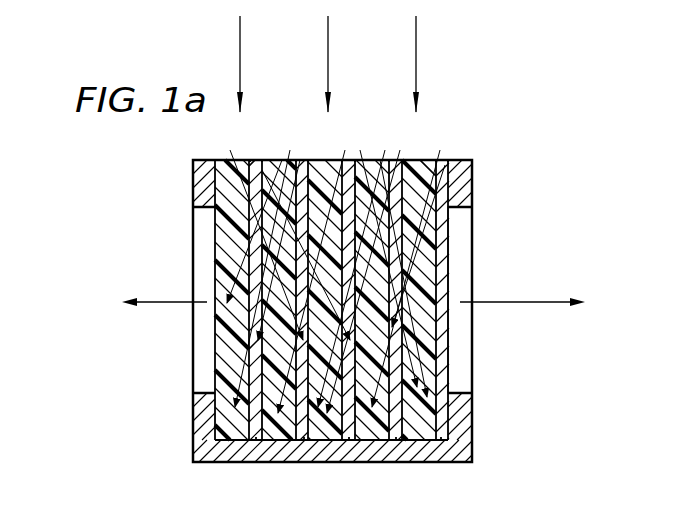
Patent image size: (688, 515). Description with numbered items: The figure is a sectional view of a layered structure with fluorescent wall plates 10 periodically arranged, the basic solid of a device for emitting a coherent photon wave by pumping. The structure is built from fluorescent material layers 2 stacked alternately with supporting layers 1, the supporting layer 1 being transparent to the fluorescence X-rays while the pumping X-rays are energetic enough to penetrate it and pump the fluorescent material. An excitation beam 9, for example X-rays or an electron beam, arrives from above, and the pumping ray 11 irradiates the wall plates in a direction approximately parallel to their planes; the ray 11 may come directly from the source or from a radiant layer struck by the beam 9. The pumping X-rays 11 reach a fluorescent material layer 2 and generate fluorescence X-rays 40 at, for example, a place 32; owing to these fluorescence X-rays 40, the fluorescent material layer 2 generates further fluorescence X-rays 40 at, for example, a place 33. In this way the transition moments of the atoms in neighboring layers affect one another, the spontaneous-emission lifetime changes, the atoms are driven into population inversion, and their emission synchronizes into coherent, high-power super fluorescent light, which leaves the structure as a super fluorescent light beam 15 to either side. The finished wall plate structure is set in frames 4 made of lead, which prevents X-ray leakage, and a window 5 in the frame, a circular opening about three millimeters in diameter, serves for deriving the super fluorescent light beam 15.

The supporting layer 1 is at (420, 158).
The fluorescent material layer 2 is at (440, 437).
The frame 4 is at (465, 435).
The window 5 is at (465, 232).
The excitation beam 9 is at (417, 60).
The fluorescent wall plate 10 is at (478, 473).
The pumping ray 11 is at (420, 160).
The super fluorescent light beam 15 is at (547, 320).
The place of fluorescence generation 32 is at (252, 160).
The place of secondary fluorescence generation 33 is at (252, 348).
The fluorescence X-ray photons 40 is at (430, 258).